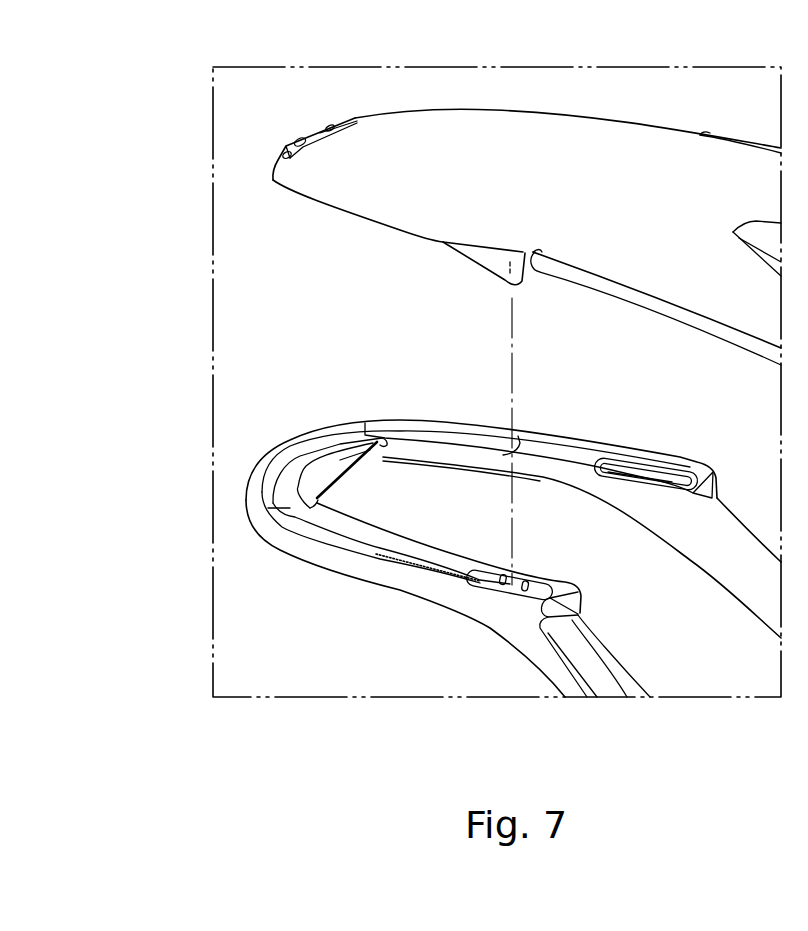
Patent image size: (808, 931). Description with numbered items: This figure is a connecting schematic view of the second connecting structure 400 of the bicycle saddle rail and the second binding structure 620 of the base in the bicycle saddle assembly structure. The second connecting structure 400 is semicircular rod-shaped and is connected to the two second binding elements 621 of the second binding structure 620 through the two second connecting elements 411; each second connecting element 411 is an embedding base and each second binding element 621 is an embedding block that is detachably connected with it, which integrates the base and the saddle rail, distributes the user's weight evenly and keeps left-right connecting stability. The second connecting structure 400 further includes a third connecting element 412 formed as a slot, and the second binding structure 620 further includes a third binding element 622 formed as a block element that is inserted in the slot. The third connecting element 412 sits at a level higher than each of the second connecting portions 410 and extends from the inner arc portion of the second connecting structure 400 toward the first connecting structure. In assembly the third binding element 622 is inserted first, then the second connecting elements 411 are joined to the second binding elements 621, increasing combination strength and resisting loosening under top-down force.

The second connecting structure 400 is at (437, 520).
The second connecting portion 410 is at (577, 450).
The second connecting element 411 is at (640, 475).
The third connecting element 412 is at (298, 490).
The second binding structure 620 is at (418, 152).
The second binding element 621 is at (487, 257).
The third binding element 622 is at (303, 140).